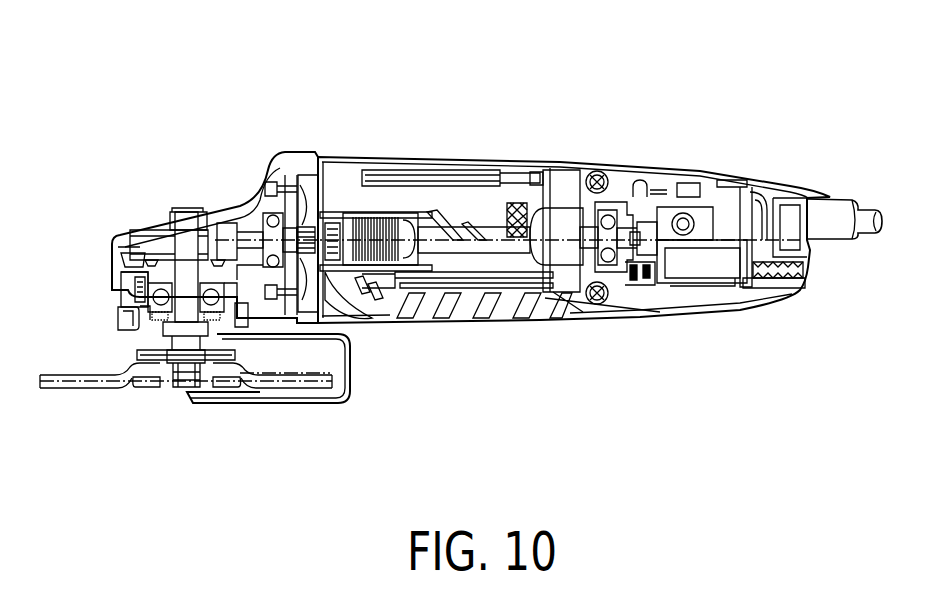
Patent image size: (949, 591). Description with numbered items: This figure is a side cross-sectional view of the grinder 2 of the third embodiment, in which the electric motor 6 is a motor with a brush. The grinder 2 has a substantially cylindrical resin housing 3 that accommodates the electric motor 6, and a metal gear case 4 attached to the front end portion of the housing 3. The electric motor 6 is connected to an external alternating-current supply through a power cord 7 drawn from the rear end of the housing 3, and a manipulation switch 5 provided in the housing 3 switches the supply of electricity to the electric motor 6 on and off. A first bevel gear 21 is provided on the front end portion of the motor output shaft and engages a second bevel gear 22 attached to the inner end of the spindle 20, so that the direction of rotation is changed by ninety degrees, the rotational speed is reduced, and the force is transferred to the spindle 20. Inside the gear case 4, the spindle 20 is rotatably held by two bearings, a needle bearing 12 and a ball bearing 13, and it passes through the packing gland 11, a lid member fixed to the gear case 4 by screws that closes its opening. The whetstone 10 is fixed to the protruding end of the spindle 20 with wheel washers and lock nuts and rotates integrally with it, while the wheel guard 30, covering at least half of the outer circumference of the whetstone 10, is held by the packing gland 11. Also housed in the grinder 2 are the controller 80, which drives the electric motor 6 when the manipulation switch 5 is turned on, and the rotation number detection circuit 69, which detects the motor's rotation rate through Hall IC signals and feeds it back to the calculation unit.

The grinder 2 is at (717, 155).
The housing 3 is at (618, 160).
The gear case 4 is at (145, 232).
The manipulation switch 5 is at (358, 205).
The electric motor 6 is at (482, 202).
The power cord 7 is at (868, 208).
The whetstone 10 is at (80, 384).
The packing gland 11 is at (120, 293).
The needle bearing 12 is at (166, 237).
The ball bearing 13 is at (140, 316).
The spindle 20 is at (193, 237).
The first bevel gear 21 is at (251, 217).
The second bevel gear 22 is at (128, 244).
The wheel guard 30 is at (265, 407).
The rotation number detection circuit 69 is at (625, 270).
The controller 80 is at (718, 273).